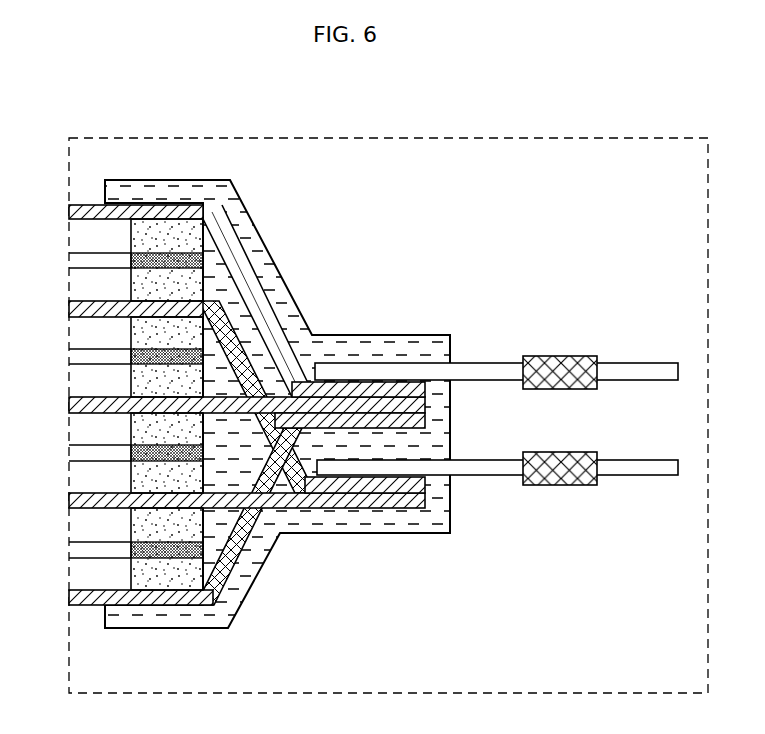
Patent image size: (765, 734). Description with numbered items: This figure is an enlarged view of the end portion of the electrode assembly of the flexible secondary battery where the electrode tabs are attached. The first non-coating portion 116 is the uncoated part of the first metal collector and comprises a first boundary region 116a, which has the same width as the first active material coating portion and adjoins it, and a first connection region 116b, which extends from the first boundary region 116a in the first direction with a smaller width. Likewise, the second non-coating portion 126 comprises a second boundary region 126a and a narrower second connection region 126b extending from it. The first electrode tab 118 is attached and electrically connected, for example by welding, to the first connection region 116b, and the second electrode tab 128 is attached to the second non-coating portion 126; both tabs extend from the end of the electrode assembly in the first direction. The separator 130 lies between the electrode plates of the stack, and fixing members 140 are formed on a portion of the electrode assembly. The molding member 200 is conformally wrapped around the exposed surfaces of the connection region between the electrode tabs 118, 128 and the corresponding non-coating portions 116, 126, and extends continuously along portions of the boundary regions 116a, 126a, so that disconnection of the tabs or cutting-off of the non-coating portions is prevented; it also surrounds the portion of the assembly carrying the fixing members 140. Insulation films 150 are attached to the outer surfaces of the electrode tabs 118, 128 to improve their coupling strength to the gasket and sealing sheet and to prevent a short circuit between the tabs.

The first non-coating portion 116 is at (312, 173).
The first boundary region 116a is at (175, 213).
The first connection region 116b is at (347, 392).
The first electrode tab 118 is at (647, 370).
The second non-coating portion 126 is at (368, 592).
The second boundary region 126a is at (165, 500).
The second connection region 126b is at (300, 500).
The second electrode tab 128 is at (646, 478).
The separator 130 is at (84, 261).
The fixing member 140 is at (153, 577).
The insulation film 150 is at (562, 355).
The molding member 200 is at (430, 348).